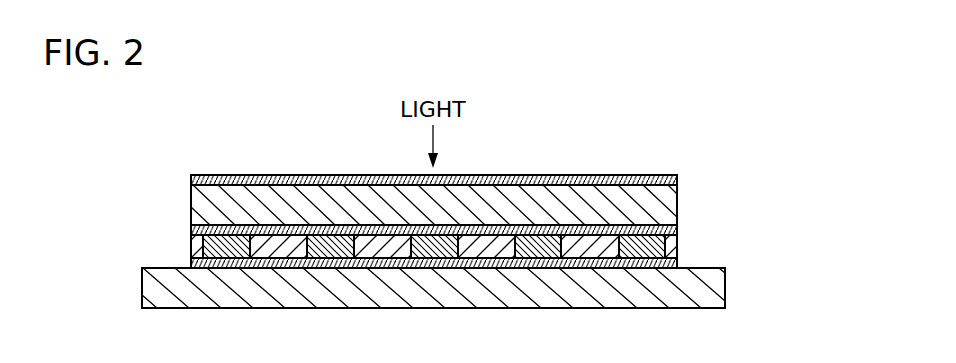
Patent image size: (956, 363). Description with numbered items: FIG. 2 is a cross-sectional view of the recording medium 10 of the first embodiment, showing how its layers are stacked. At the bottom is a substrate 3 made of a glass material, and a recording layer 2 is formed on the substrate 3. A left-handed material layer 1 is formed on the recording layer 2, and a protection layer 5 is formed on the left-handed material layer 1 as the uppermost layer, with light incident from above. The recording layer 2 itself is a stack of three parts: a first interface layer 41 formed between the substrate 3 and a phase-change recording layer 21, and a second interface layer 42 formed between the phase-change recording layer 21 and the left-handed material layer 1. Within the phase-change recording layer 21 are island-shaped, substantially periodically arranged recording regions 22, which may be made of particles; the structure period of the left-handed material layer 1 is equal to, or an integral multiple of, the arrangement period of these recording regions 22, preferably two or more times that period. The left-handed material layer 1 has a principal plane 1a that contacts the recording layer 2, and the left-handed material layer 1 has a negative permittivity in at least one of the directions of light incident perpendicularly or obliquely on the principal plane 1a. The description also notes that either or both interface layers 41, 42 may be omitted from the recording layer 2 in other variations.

The recording medium 10 is at (722, 125).
The protection layer 5 is at (642, 176).
The left-handed material layer 1 is at (678, 207).
The principal plane 1a is at (495, 226).
The recording layer 2 is at (776, 187).
The second interface layer 42 is at (678, 232).
The phase-change recording layer 21 is at (678, 248).
The recording regions 22 is at (542, 247).
The first interface layer 41 is at (678, 267).
The substrate 3 is at (713, 287).